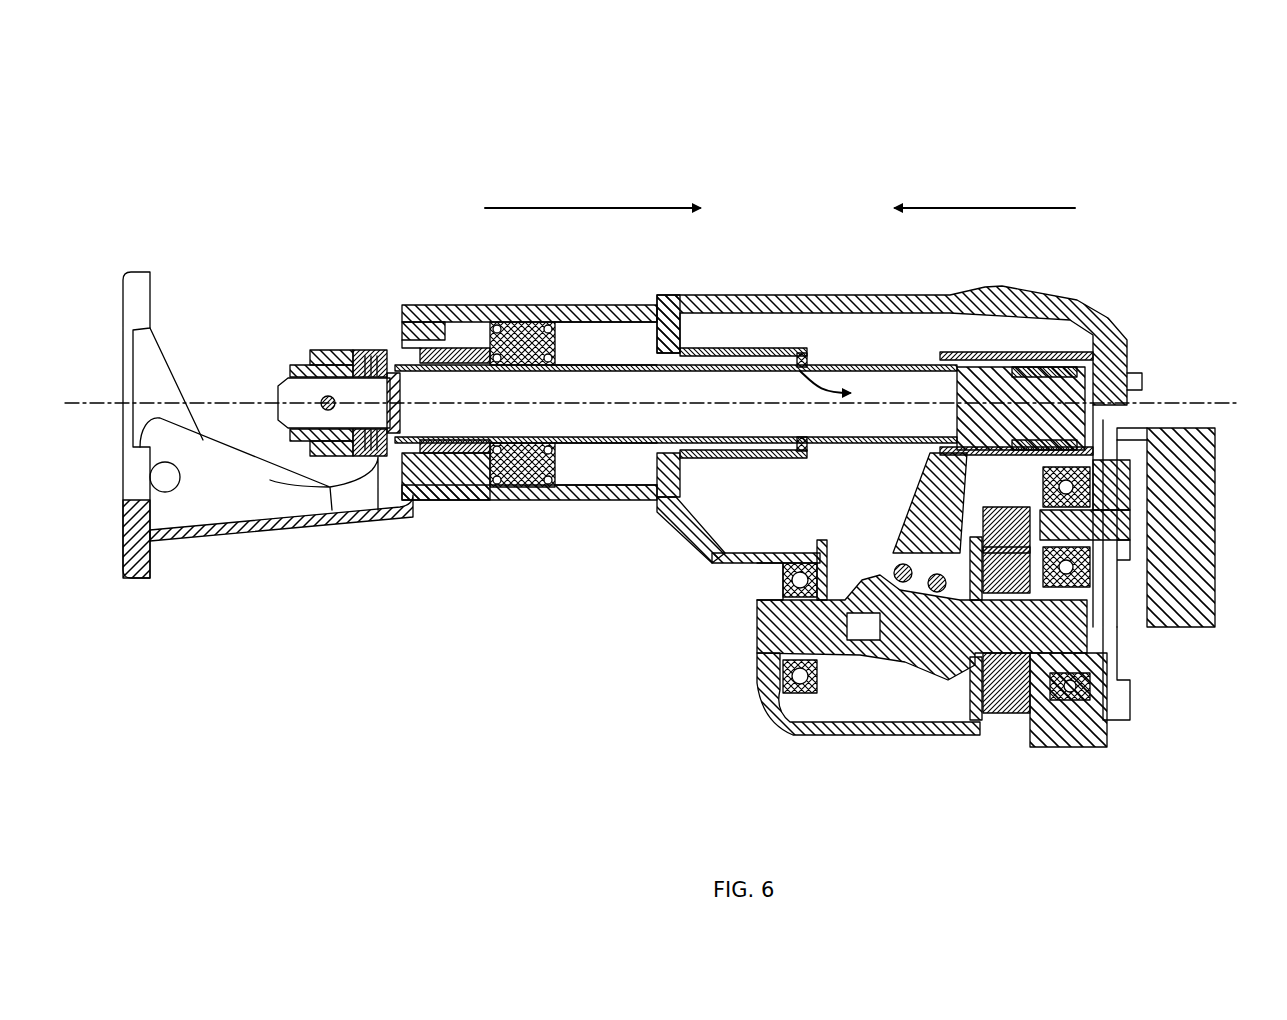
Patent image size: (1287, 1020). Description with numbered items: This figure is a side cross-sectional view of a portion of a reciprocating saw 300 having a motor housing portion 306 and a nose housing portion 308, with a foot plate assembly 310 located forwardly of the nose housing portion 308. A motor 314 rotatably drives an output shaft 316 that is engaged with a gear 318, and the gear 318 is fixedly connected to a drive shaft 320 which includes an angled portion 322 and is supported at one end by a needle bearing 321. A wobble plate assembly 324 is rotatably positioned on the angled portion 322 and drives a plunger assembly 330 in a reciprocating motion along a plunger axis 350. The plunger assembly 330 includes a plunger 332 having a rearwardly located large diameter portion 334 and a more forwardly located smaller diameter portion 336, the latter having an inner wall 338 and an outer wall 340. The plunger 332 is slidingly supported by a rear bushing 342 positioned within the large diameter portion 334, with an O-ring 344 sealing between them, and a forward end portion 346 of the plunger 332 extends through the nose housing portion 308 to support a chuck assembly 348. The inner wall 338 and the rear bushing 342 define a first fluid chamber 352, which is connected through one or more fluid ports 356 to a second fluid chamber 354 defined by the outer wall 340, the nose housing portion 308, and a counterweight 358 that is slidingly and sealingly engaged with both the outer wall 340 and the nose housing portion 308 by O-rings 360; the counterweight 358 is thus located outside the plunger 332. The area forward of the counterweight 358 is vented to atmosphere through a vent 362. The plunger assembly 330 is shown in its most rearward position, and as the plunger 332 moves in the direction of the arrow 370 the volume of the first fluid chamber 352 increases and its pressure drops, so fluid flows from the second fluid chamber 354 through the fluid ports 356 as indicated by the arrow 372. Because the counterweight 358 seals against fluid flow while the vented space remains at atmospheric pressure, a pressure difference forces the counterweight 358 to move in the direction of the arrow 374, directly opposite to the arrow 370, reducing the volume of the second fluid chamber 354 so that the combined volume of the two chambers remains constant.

The reciprocating saw 300 is at (428, 125).
The motor housing portion 306 is at (1090, 318).
The nose housing portion 308 is at (475, 305).
The foot plate assembly 310 is at (143, 290).
The motor 314 is at (1163, 428).
The output shaft 316 is at (1017, 470).
The gear 318 is at (1010, 713).
The drive shaft 320 is at (1092, 663).
The needle bearing 321 is at (1103, 672).
The angled portion 322 is at (945, 677).
The wobble plate assembly 324 is at (852, 735).
The plunger assembly 330 is at (605, 283).
The plunger 332 is at (623, 445).
The large diameter portion 334 is at (1063, 350).
The smaller diameter portion 336 is at (620, 363).
The inner wall 338 is at (858, 380).
The outer wall 340 is at (826, 350).
The rear bushing 342 is at (977, 368).
The O-ring 344 is at (953, 352).
The forward end portion 346 is at (395, 352).
The chuck assembly 348 is at (328, 348).
The plunger axis 350 is at (208, 398).
The first fluid chamber 352 is at (842, 401).
The second fluid chamber 354 is at (577, 500).
The fluid ports 356 is at (800, 371).
The counterweight 358 is at (523, 489).
The O-rings 360 is at (478, 510).
The vent 362 is at (445, 305).
The arrow 370 is at (948, 207).
The arrow 372 is at (790, 447).
The arrow 374 is at (655, 207).